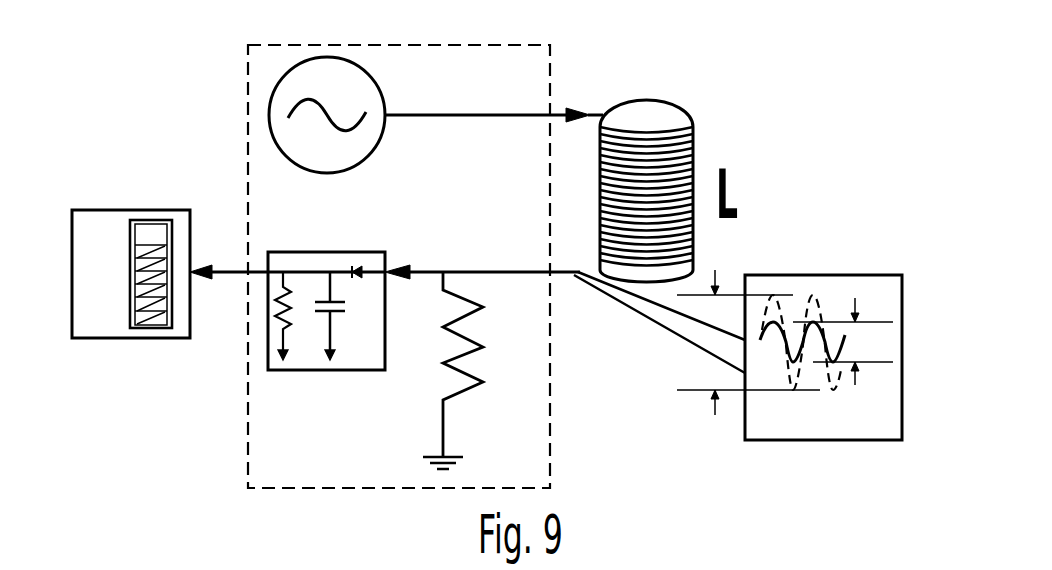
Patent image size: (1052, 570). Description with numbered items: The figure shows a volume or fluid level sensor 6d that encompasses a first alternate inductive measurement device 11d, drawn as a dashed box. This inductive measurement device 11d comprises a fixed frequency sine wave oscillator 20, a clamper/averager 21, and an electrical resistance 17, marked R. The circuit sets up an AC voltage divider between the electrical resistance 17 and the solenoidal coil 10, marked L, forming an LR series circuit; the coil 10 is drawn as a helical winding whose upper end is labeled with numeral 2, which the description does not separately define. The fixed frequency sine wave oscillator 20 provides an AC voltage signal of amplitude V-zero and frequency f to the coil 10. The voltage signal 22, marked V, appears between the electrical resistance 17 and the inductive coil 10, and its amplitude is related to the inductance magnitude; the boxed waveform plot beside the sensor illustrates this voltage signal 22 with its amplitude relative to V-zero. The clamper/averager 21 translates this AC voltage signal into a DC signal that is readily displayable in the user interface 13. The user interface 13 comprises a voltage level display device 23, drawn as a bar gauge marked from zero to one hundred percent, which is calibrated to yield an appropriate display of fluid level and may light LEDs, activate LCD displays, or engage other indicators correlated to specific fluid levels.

The core 2 is at (665, 103).
The volume or fluid level sensor 6d is at (808, 120).
The solenoidal coil 10 is at (692, 127).
The inductive measurement device 11d is at (247, 92).
The user interface 13 is at (132, 310).
The electrical resistance 17 is at (462, 397).
The fixed frequency sine wave oscillator 20 is at (372, 155).
The clamper/averager 21 is at (365, 250).
The voltage signal 22 is at (815, 275).
The voltage level display device 23 is at (150, 226).